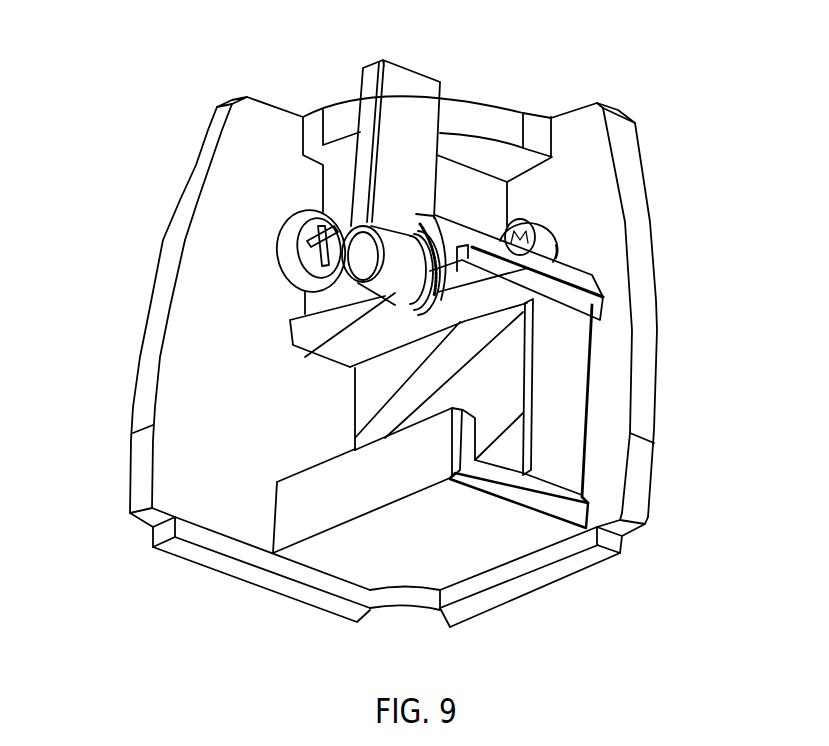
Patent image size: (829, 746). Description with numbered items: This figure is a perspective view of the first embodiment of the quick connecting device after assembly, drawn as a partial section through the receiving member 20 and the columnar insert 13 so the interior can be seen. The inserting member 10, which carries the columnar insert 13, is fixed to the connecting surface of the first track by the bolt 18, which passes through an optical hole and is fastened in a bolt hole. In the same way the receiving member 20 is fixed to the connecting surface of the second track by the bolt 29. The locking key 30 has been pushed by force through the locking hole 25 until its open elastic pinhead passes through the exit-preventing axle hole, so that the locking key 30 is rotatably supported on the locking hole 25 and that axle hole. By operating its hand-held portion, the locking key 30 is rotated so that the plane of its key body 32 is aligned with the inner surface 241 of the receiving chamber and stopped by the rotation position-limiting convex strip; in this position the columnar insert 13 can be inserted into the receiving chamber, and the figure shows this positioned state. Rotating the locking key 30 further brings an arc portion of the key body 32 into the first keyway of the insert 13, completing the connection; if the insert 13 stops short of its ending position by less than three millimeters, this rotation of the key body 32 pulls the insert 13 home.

The inserting member 10 is at (163, 197).
The columnar insert 13 is at (559, 431).
The bolt 18 is at (277, 258).
The receiving member 20 is at (665, 195).
The inner surface of the receiving chamber 241 is at (373, 347).
The locking hole 25 is at (442, 215).
The bolt 29 is at (537, 232).
The locking key 30 is at (435, 63).
The key body 32 is at (475, 315).